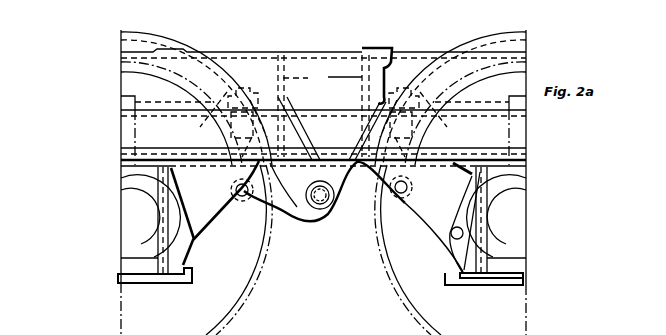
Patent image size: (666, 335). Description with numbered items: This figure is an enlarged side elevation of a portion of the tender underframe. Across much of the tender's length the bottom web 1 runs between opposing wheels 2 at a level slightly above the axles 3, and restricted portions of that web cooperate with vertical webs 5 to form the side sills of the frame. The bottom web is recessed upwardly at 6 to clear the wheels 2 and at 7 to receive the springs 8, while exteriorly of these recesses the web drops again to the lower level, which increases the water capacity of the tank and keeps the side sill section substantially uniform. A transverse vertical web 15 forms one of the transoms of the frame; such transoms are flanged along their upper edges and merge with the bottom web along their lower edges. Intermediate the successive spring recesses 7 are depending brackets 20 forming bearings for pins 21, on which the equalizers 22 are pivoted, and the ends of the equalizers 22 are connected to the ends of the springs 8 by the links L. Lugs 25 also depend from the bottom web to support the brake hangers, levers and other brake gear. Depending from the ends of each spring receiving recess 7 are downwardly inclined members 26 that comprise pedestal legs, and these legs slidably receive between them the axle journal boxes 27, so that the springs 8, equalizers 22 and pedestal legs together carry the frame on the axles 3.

The bottom web 1 is at (146, 62).
The wheels 2 is at (242, 276).
The axles 3 is at (130, 219).
The vertical webs 5 is at (149, 128).
The recess for wheels 6 is at (196, 98).
The recess for springs 7 is at (450, 98).
The springs 8 is at (161, 102).
The transverse vertical web 15 is at (337, 76).
The depending brackets 20 is at (283, 202).
The pins 21 is at (326, 210).
The equalizers 22 is at (355, 205).
The lugs 25 is at (203, 209).
The downwardly inclined members 26 is at (437, 216).
The axle journal boxes 27 is at (134, 258).
The links L is at (228, 168).